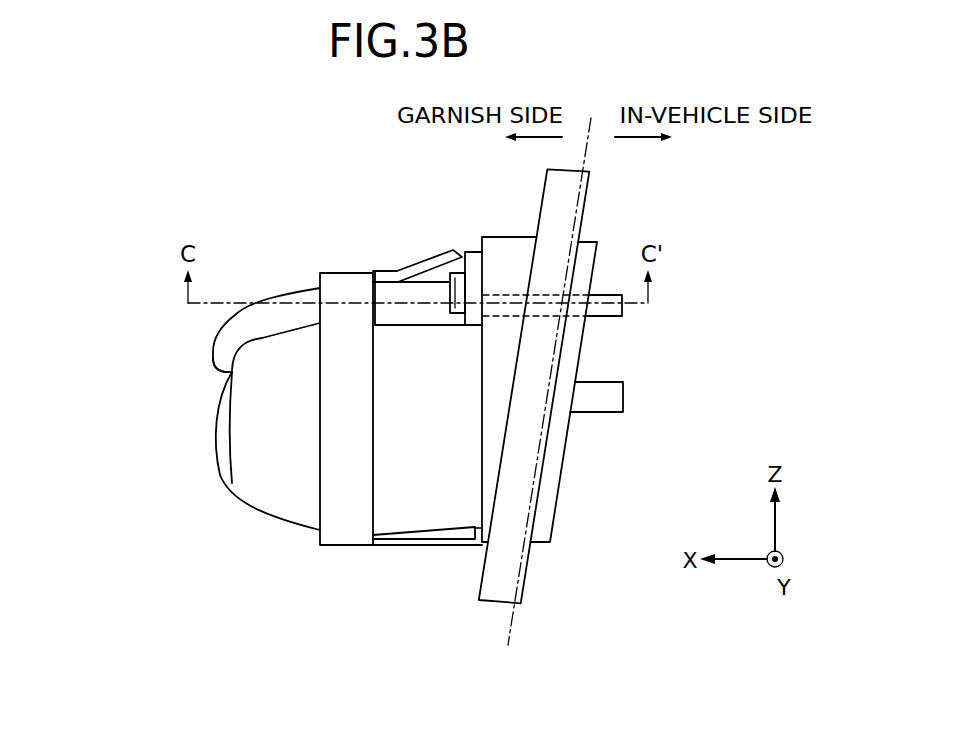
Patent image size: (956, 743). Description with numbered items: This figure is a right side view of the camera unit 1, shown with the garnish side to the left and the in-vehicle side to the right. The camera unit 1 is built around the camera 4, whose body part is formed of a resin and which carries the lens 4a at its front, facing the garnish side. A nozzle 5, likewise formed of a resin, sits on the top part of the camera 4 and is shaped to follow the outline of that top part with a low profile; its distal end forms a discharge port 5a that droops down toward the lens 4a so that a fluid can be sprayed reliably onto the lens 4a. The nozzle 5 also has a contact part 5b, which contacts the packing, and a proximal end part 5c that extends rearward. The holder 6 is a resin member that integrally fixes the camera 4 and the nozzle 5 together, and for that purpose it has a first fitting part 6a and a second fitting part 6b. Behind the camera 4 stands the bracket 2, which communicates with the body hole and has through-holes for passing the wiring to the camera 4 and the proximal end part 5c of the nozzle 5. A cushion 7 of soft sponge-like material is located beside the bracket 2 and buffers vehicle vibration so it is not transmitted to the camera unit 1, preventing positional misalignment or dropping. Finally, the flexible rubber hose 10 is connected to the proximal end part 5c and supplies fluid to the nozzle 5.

The camera unit 1 is at (226, 192).
The bracket 2 is at (568, 192).
The camera 4 is at (411, 450).
The lens 4a is at (215, 432).
The nozzle 5 is at (223, 334).
The discharge port 5a is at (208, 384).
The contact part 5b is at (468, 258).
The proximal end part 5c is at (489, 283).
The holder 6 is at (337, 290).
The first fitting part 6a is at (410, 265).
The second fitting part 6b is at (413, 548).
The cushion 7 is at (543, 540).
The hose 10 is at (552, 293).